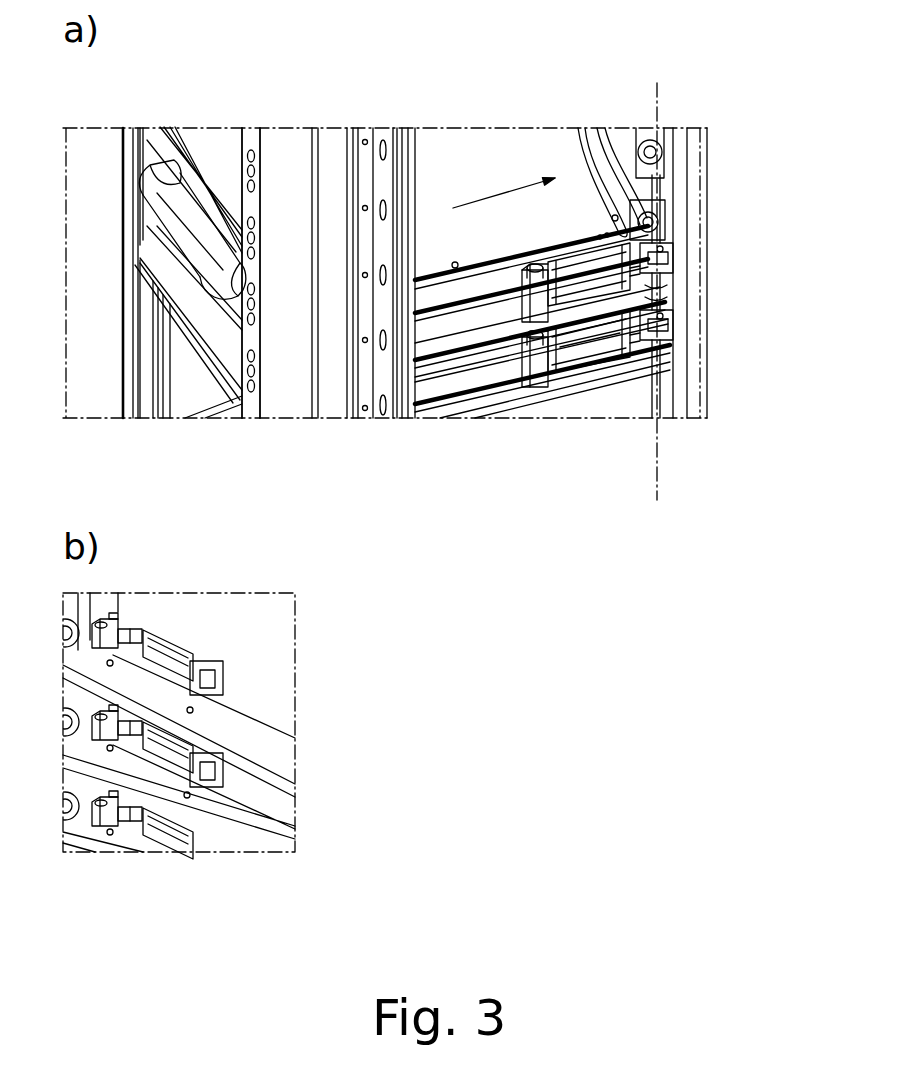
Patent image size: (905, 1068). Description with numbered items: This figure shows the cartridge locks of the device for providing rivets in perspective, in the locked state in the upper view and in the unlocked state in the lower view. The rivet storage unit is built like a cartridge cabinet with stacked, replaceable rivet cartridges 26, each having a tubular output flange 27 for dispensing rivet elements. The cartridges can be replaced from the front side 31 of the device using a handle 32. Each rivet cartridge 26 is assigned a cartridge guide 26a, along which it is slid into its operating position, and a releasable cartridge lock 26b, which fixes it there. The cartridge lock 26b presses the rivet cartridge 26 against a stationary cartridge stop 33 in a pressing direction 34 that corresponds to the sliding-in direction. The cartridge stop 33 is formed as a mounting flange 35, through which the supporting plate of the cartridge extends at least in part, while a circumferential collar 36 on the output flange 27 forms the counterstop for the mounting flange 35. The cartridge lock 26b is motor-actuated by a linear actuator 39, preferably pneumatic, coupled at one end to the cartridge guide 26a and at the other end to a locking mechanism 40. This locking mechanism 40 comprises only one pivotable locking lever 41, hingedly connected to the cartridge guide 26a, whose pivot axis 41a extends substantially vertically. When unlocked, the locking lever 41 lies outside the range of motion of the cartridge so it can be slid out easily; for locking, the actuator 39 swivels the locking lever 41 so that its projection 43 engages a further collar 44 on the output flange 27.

The rivet cartridge 26 is at (492, 157).
The cartridge guide 26a is at (487, 380).
The cartridge lock 26b is at (605, 378).
The output flange 27 is at (625, 215).
The front side 31 is at (152, 248).
The handle 32 is at (153, 217).
The cartridge stop 33 is at (423, 492).
The pressing direction 34 is at (493, 195).
The mounting flange 35 is at (667, 155).
The circumferential collar 36 is at (627, 153).
The linear actuator 39 is at (582, 360).
The locking mechanism 40 is at (143, 620).
The locking lever 41 is at (667, 242).
The pivot axis 41a is at (657, 450).
The projection 43 is at (640, 230).
The further collar 44 is at (622, 205).